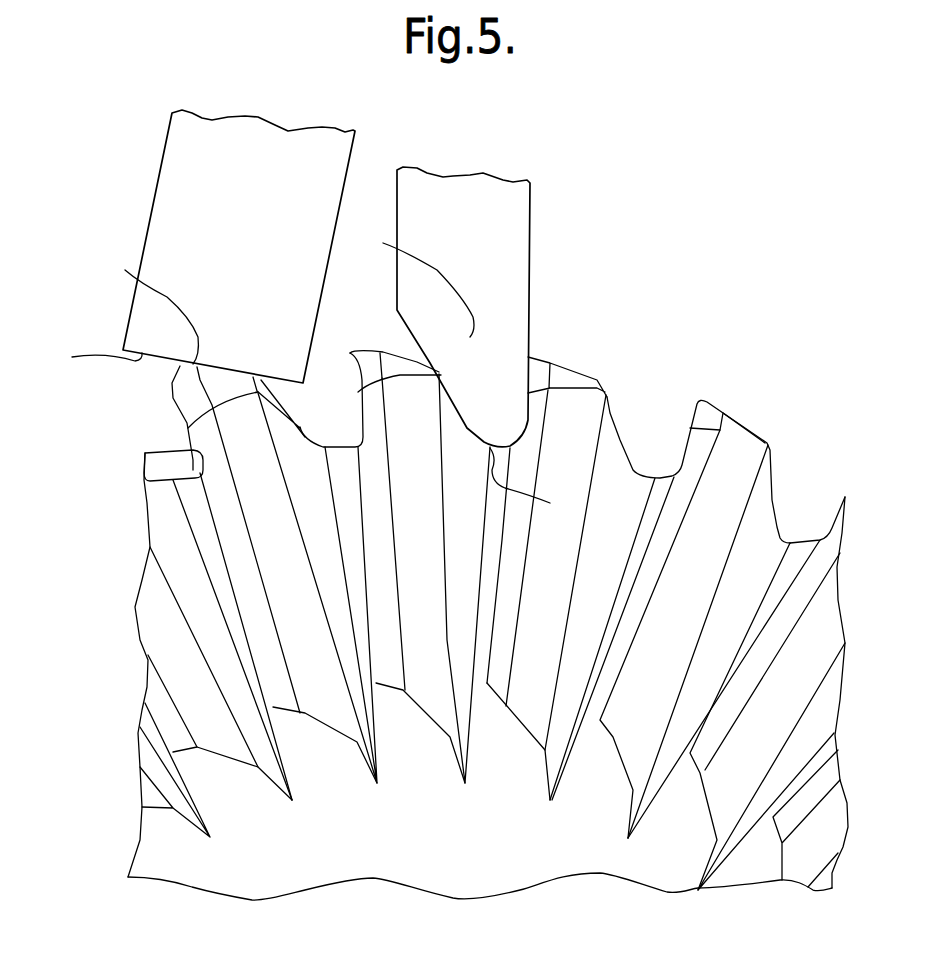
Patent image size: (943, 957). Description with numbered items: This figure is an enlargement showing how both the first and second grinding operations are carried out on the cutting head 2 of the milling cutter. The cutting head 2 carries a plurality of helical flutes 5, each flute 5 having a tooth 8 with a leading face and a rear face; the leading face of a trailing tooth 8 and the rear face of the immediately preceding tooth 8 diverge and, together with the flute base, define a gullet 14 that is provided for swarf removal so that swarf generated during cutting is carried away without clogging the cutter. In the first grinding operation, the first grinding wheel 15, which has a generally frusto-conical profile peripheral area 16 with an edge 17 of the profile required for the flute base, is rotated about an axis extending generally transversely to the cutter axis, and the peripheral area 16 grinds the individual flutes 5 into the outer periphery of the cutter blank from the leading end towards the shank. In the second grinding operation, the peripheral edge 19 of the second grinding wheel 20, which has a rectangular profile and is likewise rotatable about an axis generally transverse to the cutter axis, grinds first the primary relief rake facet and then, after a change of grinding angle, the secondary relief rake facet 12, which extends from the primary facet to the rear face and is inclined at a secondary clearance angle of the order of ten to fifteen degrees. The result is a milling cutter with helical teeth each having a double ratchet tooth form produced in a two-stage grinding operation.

The cutting head 2 is at (780, 462).
The helical flute 5 is at (677, 410).
The tooth 8 is at (165, 411).
The secondary relief rake facet 12 is at (154, 305).
The gullet 14 is at (321, 440).
The first grinding wheel 15 is at (495, 200).
The peripheral area 16 is at (414, 283).
The edge 17 is at (534, 483).
The peripheral edge 19 is at (92, 359).
The second grinding wheel 20 is at (150, 189).